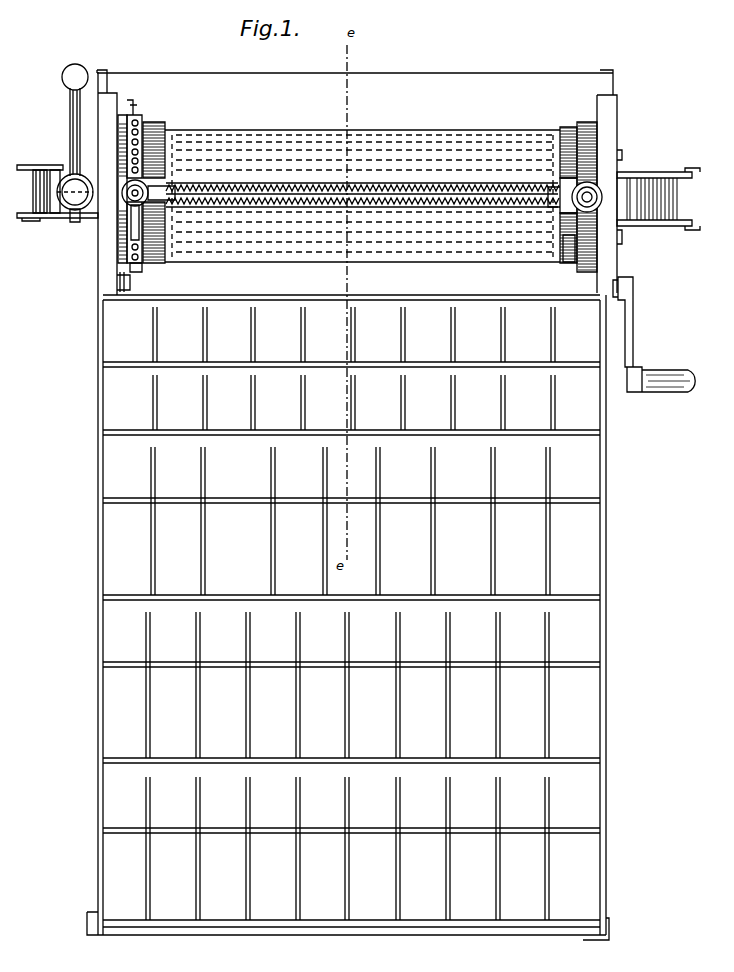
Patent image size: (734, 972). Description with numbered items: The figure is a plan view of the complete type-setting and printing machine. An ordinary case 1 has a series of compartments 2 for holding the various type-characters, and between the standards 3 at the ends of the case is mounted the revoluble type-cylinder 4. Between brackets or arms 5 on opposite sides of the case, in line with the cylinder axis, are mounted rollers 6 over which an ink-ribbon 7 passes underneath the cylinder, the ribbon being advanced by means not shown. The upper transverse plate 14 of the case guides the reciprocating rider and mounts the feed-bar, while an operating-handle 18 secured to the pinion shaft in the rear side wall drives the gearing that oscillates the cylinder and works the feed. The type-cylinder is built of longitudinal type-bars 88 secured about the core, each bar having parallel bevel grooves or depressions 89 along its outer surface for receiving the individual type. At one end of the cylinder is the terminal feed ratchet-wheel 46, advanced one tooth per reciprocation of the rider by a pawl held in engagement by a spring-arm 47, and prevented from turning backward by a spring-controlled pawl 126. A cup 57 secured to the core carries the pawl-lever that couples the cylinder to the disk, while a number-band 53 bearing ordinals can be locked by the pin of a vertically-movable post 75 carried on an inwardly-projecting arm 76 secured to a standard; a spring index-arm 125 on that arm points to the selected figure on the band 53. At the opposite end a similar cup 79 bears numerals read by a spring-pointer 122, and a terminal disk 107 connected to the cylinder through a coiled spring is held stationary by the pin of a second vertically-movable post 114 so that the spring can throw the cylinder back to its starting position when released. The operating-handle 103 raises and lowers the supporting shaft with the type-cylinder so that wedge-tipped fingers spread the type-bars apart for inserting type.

The case 1 is at (606, 532).
The compartments 2 is at (353, 608).
The standards 3 is at (104, 121).
The type-cylinder 4 is at (389, 131).
The brackets or arms 5 is at (40, 167).
The rollers 6 is at (34, 218).
The ink-ribbon 7 is at (97, 219).
The upper transverse plate 14 is at (355, 85).
The operating-handle 18 is at (656, 370).
The ratchet-wheel 46 is at (118, 141).
The spring-arm 47 is at (126, 283).
The band 53 is at (143, 266).
The cup 57 is at (165, 126).
The vertically-movable post 75 is at (121, 194).
The inwardly-projecting arm 76 is at (173, 185).
The cup 79 is at (568, 127).
The type-bar 88 is at (276, 175).
The bevel grooves or depressions 89 is at (327, 197).
The operating-handle 103 is at (70, 118).
The terminal disk 107 is at (597, 141).
The vertically-movable post 114 is at (593, 194).
The spring-pointer 122 is at (560, 264).
The spring index-arm 125 is at (120, 237).
The spring-controlled pawl 126 is at (134, 119).